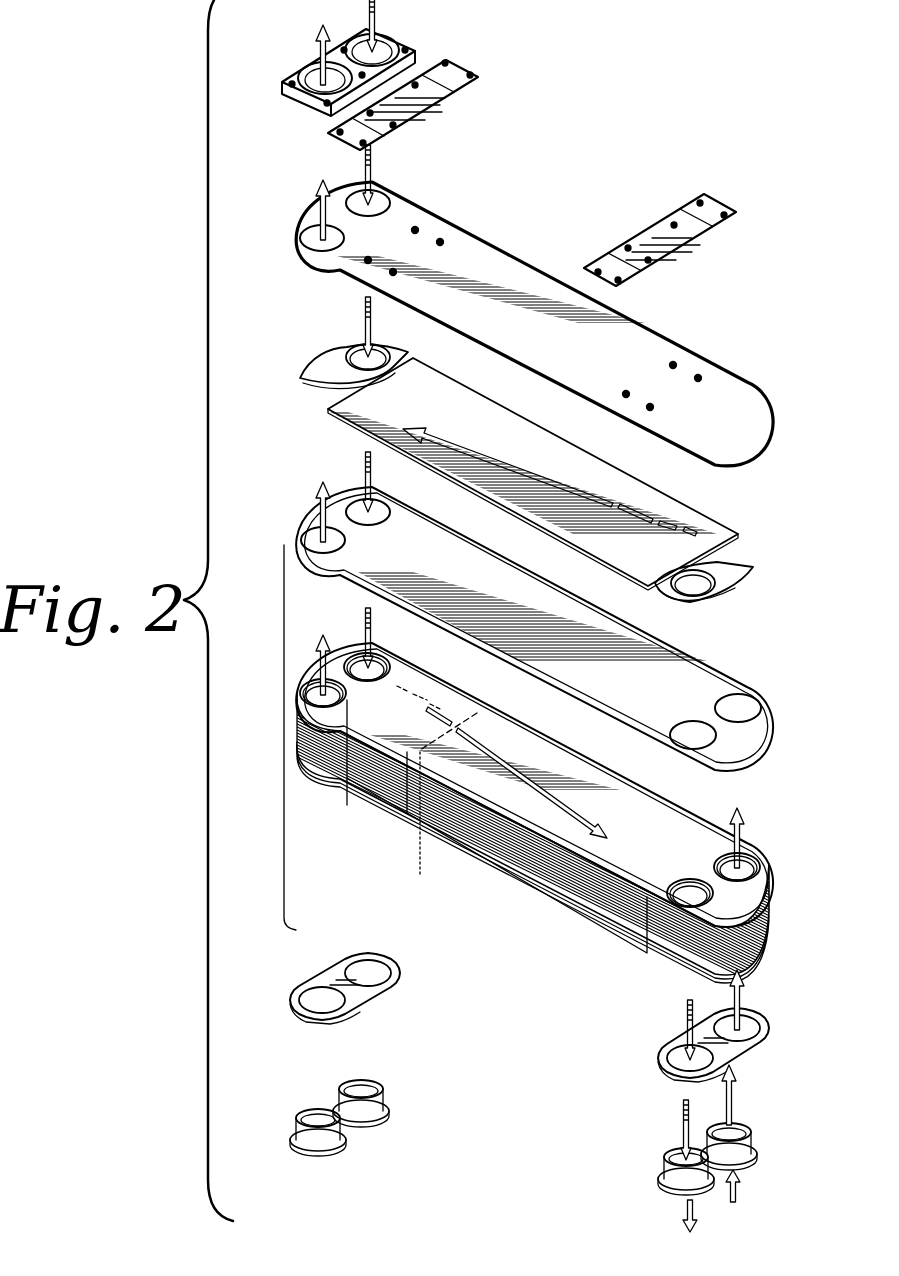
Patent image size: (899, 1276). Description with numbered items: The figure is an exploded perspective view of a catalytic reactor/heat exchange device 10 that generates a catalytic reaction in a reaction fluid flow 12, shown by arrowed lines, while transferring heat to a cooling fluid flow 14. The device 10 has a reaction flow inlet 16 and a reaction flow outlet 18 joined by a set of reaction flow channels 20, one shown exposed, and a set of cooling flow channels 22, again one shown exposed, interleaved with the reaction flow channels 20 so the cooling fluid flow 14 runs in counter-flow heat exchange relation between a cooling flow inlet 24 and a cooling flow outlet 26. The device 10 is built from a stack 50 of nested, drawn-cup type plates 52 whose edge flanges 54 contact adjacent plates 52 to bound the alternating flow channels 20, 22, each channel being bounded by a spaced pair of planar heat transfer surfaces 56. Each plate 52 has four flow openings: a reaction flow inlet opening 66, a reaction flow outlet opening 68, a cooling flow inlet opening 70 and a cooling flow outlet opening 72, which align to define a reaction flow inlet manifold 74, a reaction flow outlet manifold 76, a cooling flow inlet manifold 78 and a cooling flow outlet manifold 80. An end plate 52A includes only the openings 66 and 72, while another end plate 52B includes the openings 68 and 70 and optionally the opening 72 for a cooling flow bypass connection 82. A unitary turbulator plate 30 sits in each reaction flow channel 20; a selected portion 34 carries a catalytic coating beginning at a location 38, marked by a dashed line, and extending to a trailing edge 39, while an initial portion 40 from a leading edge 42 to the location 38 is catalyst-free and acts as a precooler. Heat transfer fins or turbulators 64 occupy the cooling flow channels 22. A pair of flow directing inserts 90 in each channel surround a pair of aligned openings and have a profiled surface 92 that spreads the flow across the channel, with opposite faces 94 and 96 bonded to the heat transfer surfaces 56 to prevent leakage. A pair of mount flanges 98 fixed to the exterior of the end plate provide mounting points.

The catalytic reactor/heat exchange device 10 is at (572, 78).
The reaction fluid flow 12 is at (380, 22).
The cooling fluid flow 14 is at (318, 45).
The reaction flow inlet 16 is at (402, 52).
The reaction flow outlet 18 is at (676, 1188).
The reaction flow channels 20 is at (647, 897).
The cooling flow channels 22 is at (413, 531).
The cooling flow inlet 24 is at (764, 1163).
The cooling flow outlet 26 is at (300, 72).
The turbulator 30 is at (600, 858).
The selected portion of the turbulator 34 is at (530, 893).
The location 38 is at (443, 808).
The trailing edge of the turbulator 39 is at (668, 890).
The initial portion of the turbulator 40 is at (375, 812).
The leading edge of the turbulator 42 is at (347, 805).
The stack 50 is at (287, 655).
The plates 52 is at (310, 500).
The end plate 52A is at (318, 200).
The end plate 52B is at (300, 738).
The edge flanges 54 is at (315, 480).
The heat transfer surfaces 56 is at (480, 586).
The heat transfer fins or turbulators 64 is at (470, 400).
The reaction flow inlet opening 66 is at (385, 195).
The reaction flow outlet opening 68 is at (715, 742).
The cooling flow inlet opening 70 is at (745, 700).
The cooling flow outlet opening 72 is at (305, 230).
The reaction flow inlet manifold 74 is at (385, 660).
The reaction flow outlet manifold 76 is at (602, 835).
The cooling flow inlet manifold 78 is at (700, 812).
The cooling flow outlet manifold 80 is at (305, 703).
The cooling flow bypass connection 82 is at (302, 1142).
The flow directing inserts 90 is at (318, 365).
The profiled surface 92 is at (320, 368).
The face of the insert 94 is at (345, 350).
The face of the insert 96 is at (368, 385).
The mount flanges 98 is at (462, 62).